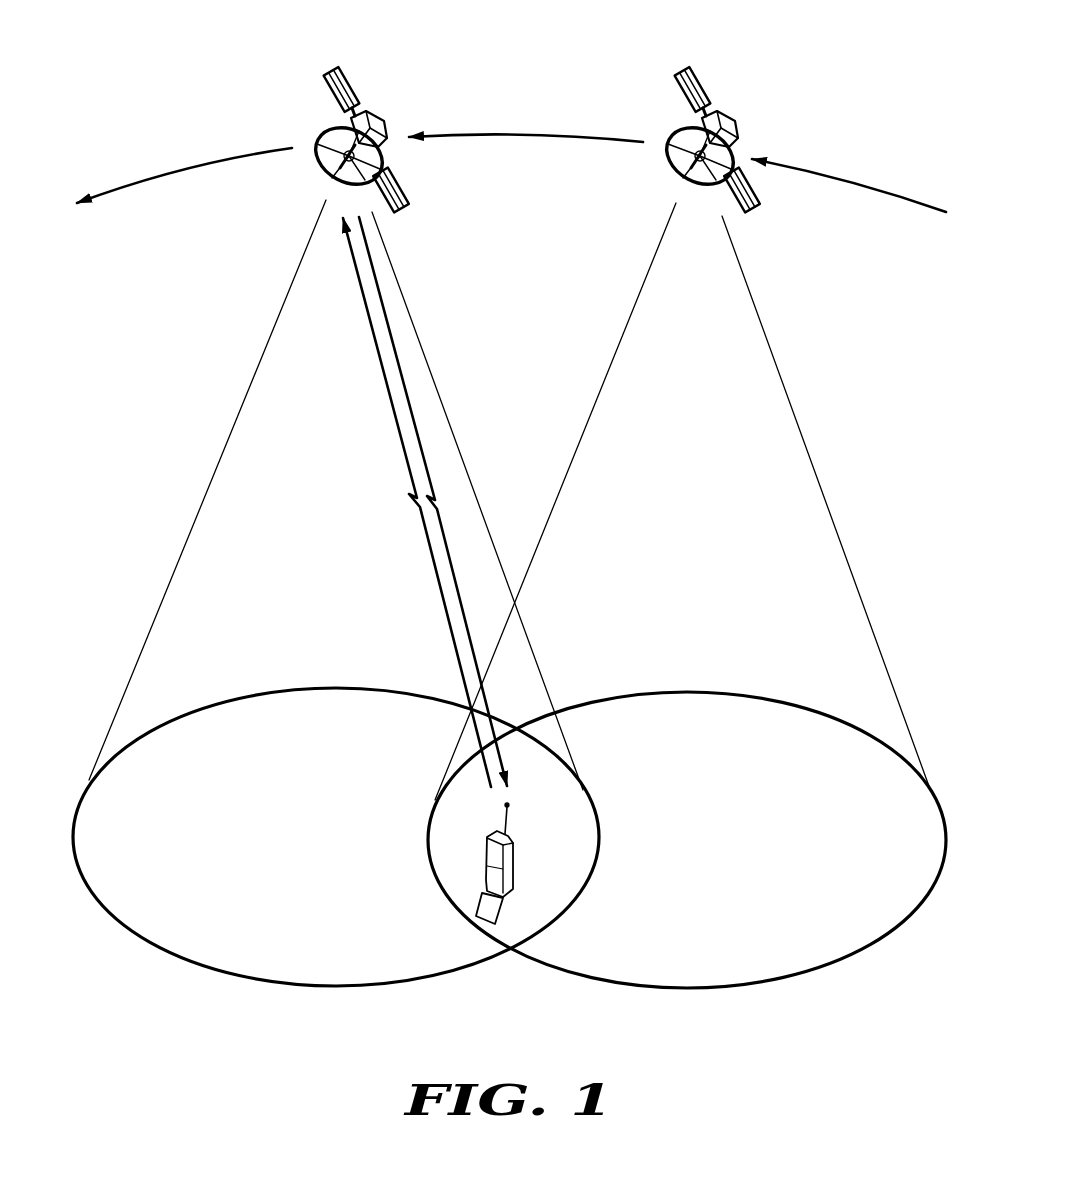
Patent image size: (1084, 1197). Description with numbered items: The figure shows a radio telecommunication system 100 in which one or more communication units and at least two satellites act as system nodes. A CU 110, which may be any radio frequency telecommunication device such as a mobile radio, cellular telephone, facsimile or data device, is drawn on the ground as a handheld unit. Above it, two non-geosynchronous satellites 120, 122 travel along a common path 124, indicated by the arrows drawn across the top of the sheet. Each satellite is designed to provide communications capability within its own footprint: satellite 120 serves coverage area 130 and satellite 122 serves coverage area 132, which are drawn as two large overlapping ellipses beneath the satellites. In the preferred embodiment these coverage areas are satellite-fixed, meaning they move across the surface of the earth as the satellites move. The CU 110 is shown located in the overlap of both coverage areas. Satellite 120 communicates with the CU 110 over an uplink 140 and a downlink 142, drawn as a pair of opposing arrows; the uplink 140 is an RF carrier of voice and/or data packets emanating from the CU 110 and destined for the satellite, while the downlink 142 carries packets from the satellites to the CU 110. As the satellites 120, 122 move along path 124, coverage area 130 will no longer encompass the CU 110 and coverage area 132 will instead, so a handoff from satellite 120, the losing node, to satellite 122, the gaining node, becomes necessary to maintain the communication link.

The radio telecommunication system 100 is at (311, 1106).
The communication unit (CU) 110 is at (516, 866).
The satellite 120 is at (345, 74).
The satellite 122 is at (695, 74).
The path 124 is at (189, 170).
The coverage area 130 is at (368, 986).
The coverage area 132 is at (721, 988).
The uplink 140 is at (381, 364).
The downlink 142 is at (400, 364).